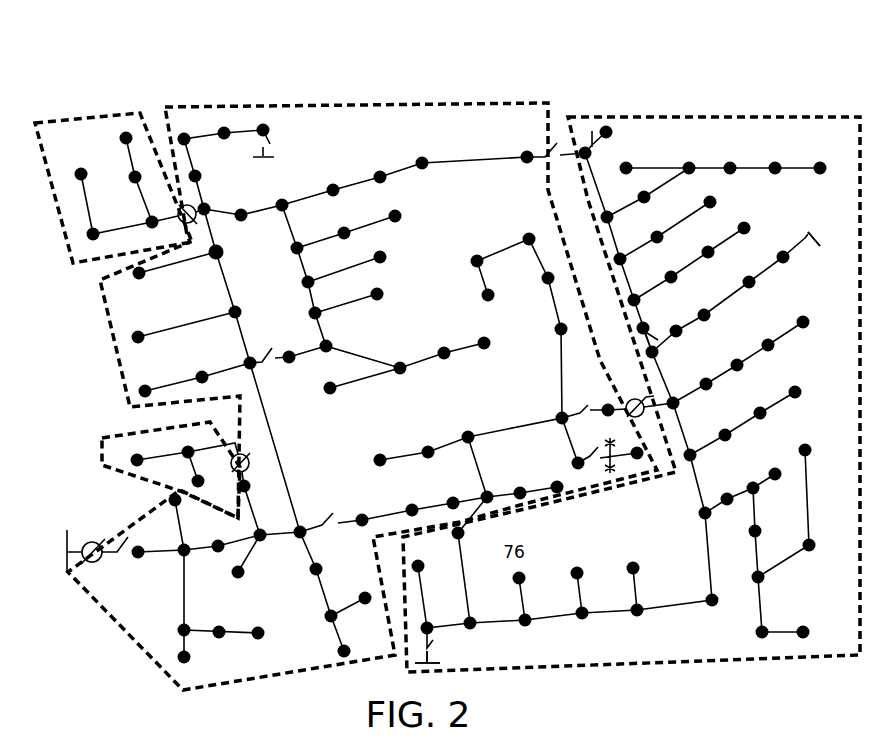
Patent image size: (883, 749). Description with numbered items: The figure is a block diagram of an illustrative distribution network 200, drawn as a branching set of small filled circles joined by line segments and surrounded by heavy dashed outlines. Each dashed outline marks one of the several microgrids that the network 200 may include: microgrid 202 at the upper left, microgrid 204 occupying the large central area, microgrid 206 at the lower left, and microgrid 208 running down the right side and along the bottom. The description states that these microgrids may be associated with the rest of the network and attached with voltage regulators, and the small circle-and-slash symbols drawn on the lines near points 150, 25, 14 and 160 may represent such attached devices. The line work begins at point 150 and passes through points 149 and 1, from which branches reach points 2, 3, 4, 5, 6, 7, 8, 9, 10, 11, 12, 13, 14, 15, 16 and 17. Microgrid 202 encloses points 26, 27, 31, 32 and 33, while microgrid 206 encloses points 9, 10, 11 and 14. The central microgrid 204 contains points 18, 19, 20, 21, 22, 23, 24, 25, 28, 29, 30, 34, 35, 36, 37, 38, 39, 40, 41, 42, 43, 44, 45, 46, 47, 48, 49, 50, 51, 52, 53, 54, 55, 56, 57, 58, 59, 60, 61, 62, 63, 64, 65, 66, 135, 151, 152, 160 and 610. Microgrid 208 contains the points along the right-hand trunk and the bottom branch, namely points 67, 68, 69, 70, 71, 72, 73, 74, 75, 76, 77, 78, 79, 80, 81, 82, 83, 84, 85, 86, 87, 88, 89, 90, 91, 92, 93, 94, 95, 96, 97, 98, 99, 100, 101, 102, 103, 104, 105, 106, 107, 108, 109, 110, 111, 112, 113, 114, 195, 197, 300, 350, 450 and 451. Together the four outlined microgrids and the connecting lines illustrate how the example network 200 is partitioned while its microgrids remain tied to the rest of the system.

The distribution network 200 is at (446, 60).
The microgrid 202 is at (64, 110).
The microgrid 204 is at (237, 98).
The microgrid 206 is at (95, 459).
The microgrid 208 is at (722, 108).
The substation source node 150 is at (82, 560).
The bus node 1 is at (182, 560).
The bus node 2 is at (169, 502).
The bus node 3 is at (177, 630).
The bus node 4 is at (177, 663).
The bus node 5 is at (216, 641).
The bus node 6 is at (255, 642).
The bus node 7 is at (215, 537).
The bus node 8 is at (254, 529).
The bus node 9 is at (250, 485).
The bus node 10 is at (203, 489).
The bus node 11 is at (133, 452).
The bus node 12 is at (246, 576).
The bus node 13 is at (290, 525).
The bus node 14 is at (186, 444).
The bus node 15 is at (322, 614).
The bus node 16 is at (335, 652).
The bus node 17 is at (357, 591).
The bus node 18 is at (259, 372).
The bus node 19 is at (203, 369).
The bus node 20 is at (145, 384).
The bus node 21 is at (243, 305).
The bus node 22 is at (138, 329).
The bus node 23 is at (225, 251).
The bus node 24 is at (141, 283).
The bus node 25 is at (210, 202).
The bus node 26 is at (139, 217).
The bus node 27 is at (84, 230).
The bus node 28 is at (187, 170).
The bus node 29 is at (172, 134).
The bus node 30 is at (219, 142).
The bus node 31 is at (126, 180).
The bus node 32 is at (115, 135).
The bus node 33 is at (77, 165).
The bus node 34 is at (305, 568).
The bus node 35 is at (327, 354).
The bus node 36 is at (395, 361).
The bus node 37 is at (326, 395).
The bus node 38 is at (439, 346).
The bus node 39 is at (479, 336).
The bus node 40 is at (305, 313).
The bus node 41 is at (371, 289).
The bus node 42 is at (297, 281).
The bus node 43 is at (378, 250).
The bus node 44 is at (285, 246).
The bus node 45 is at (336, 227).
The bus node 46 is at (388, 210).
The bus node 47 is at (273, 197).
The bus node 48 is at (235, 208).
The bus node 49 is at (322, 183).
The bus node 50 is at (369, 170).
The bus node 51 is at (428, 156).
The bus node 52 is at (403, 503).
The bus node 53 is at (443, 496).
The bus node 54 is at (477, 490).
The bus node 55 is at (514, 501).
The bus node 56 is at (557, 487).
The bus node 57 is at (456, 430).
The bus node 58 is at (421, 444).
The bus node 59 is at (373, 452).
The bus node 60 is at (551, 412).
The bus node 61 is at (567, 463).
The bus node 62 is at (551, 324).
The bus node 63 is at (538, 273).
The bus node 64 is at (522, 235).
The bus node 65 is at (480, 253).
The bus node 66 is at (480, 293).
The bus node 67 is at (677, 399).
The bus node 68 is at (695, 389).
The bus node 69 is at (726, 359).
The bus node 70 is at (760, 339).
The bus node 71 is at (793, 315).
The bus node 72 is at (680, 451).
The bus node 73 is at (716, 428).
The bus node 74 is at (750, 408).
The bus node 75 is at (786, 388).
The bus node 76 is at (695, 515).
The bus node 77 is at (720, 493).
The bus node 78 is at (745, 482).
The bus node 79 is at (768, 467).
The bus node 80 is at (746, 529).
The bus node 81 is at (748, 574).
The bus node 82 is at (750, 632).
The bus node 83 is at (800, 624).
The bus node 84 is at (798, 540).
The bus node 85 is at (815, 450).
The bus node 86 is at (710, 610).
The bus node 87 is at (640, 619).
The bus node 88 is at (621, 570).
The bus node 89 is at (581, 623).
The bus node 90 is at (567, 573).
The bus node 91 is at (524, 630).
The bus node 92 is at (508, 578).
The bus node 93 is at (470, 633).
The bus node 94 is at (449, 535).
The bus node 95 is at (415, 628).
The bus node 96 is at (406, 560).
The bus node 97 is at (642, 355).
The bus node 98 is at (670, 324).
The bus node 99 is at (698, 309).
The bus node 100 is at (735, 275).
The bus node 101 is at (621, 295).
The bus node 102 is at (660, 269).
The bus node 103 is at (696, 244).
The bus node 104 is at (734, 223).
The bus node 105 is at (607, 257).
The bus node 106 is at (643, 230).
The bus node 107 is at (710, 194).
The bus node 108 is at (595, 215).
The bus node 109 is at (631, 191).
The bus node 110 is at (689, 158).
The bus node 111 is at (626, 158).
The bus node 112 is at (730, 158).
The bus node 113 is at (775, 158).
The bus node 114 is at (820, 158).
The bus node 135 is at (295, 365).
The bus node 149 is at (140, 561).
The bus node 151 is at (527, 167).
The bus node 152 is at (352, 513).
The bus node 160 is at (603, 402).
The ground node 195 is at (440, 660).
The bus node 197 is at (630, 329).
The bus node 300 is at (575, 160).
The bus node 350 is at (619, 130).
The bus node 450 is at (770, 251).
The switch node 451 is at (815, 227).
The bus node 610 is at (643, 461).